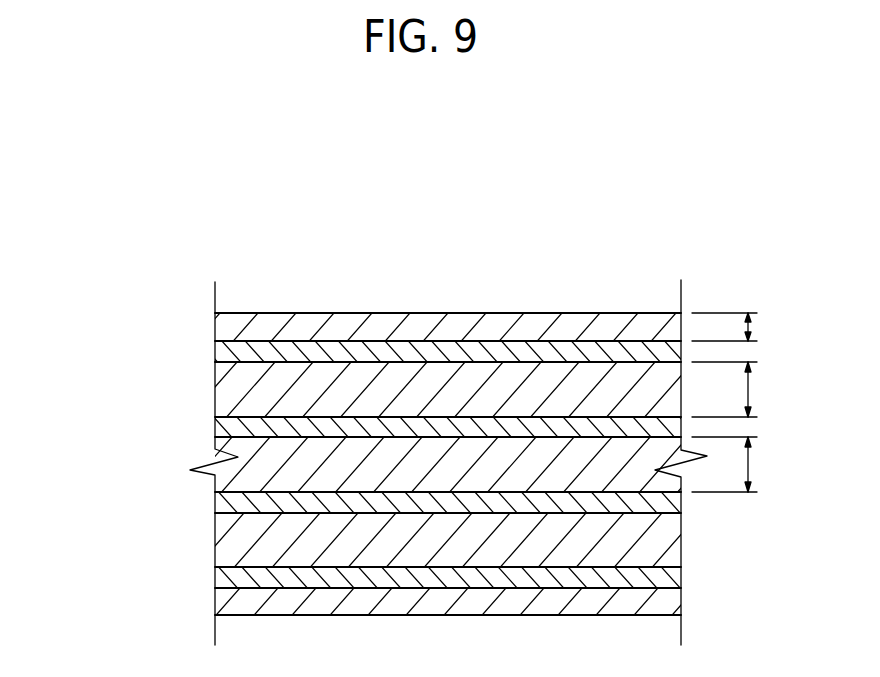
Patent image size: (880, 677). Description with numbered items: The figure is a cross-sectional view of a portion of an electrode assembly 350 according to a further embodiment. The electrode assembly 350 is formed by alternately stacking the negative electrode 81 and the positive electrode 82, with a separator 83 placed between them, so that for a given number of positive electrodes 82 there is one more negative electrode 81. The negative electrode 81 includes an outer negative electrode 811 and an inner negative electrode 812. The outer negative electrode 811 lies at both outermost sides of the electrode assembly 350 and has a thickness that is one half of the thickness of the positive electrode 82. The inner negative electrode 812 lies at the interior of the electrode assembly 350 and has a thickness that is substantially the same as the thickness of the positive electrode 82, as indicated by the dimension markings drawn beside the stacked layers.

The electrode assembly 350 is at (440, 408).
The negative electrode 81 is at (440, 460).
The outer negative electrode 811 is at (235, 328).
The inner negative electrode 812 is at (250, 468).
The positive electrode 82 is at (552, 535).
The separator 83 is at (391, 432).